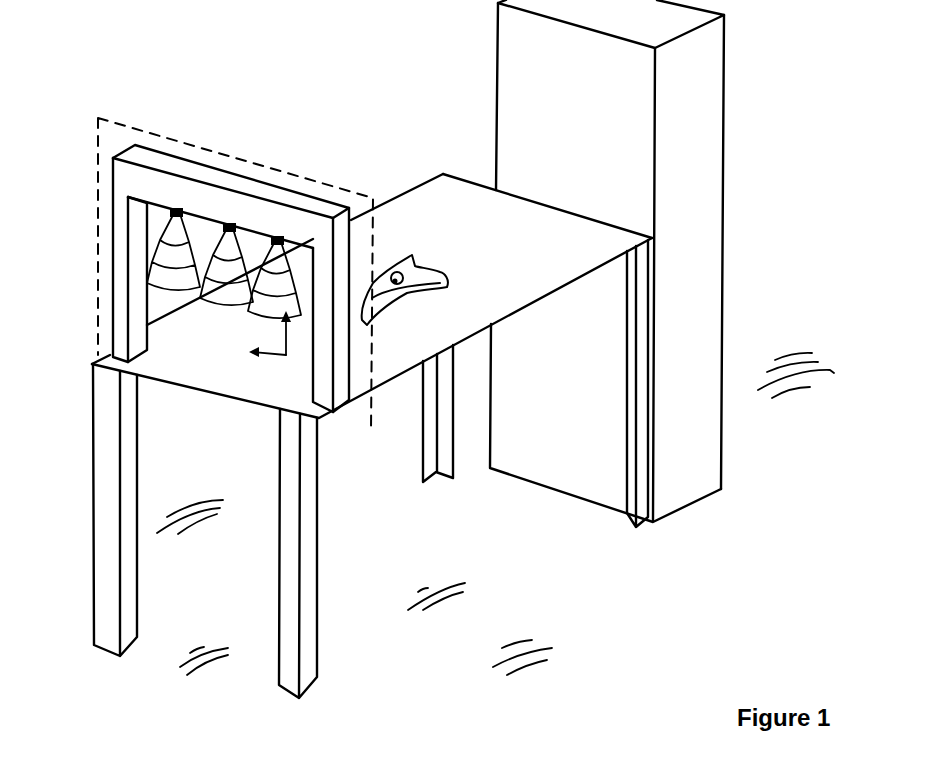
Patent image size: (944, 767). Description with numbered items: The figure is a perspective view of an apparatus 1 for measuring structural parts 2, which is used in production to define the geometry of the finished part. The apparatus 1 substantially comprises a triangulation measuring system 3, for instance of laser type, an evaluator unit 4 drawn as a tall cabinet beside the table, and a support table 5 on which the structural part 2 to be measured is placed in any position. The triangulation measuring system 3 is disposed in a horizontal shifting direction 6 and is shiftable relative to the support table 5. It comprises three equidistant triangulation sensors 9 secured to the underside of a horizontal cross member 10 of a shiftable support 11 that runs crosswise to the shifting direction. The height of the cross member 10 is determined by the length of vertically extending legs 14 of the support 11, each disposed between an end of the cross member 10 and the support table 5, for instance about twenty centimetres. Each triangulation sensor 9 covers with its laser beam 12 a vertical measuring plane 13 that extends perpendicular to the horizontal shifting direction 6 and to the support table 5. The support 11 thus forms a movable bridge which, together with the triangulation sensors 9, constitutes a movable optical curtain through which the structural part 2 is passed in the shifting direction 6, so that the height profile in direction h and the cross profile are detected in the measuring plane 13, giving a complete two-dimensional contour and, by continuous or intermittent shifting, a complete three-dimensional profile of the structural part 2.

The apparatus 1 is at (726, 587).
The structural part 2 is at (437, 273).
The triangulation measuring system 3 is at (210, 261).
The evaluator unit 4 is at (708, 204).
The support table 5 is at (457, 182).
The horizontal shifting direction 6 is at (40, 317).
The triangulation sensors 9 is at (177, 212).
The horizontal cross member 10 is at (247, 184).
The shiftable support 11 is at (304, 376).
The laser beams 12 is at (210, 280).
The vertical measuring plane 13 is at (347, 188).
The legs 14 is at (120, 337).
The height profile direction h is at (286, 345).